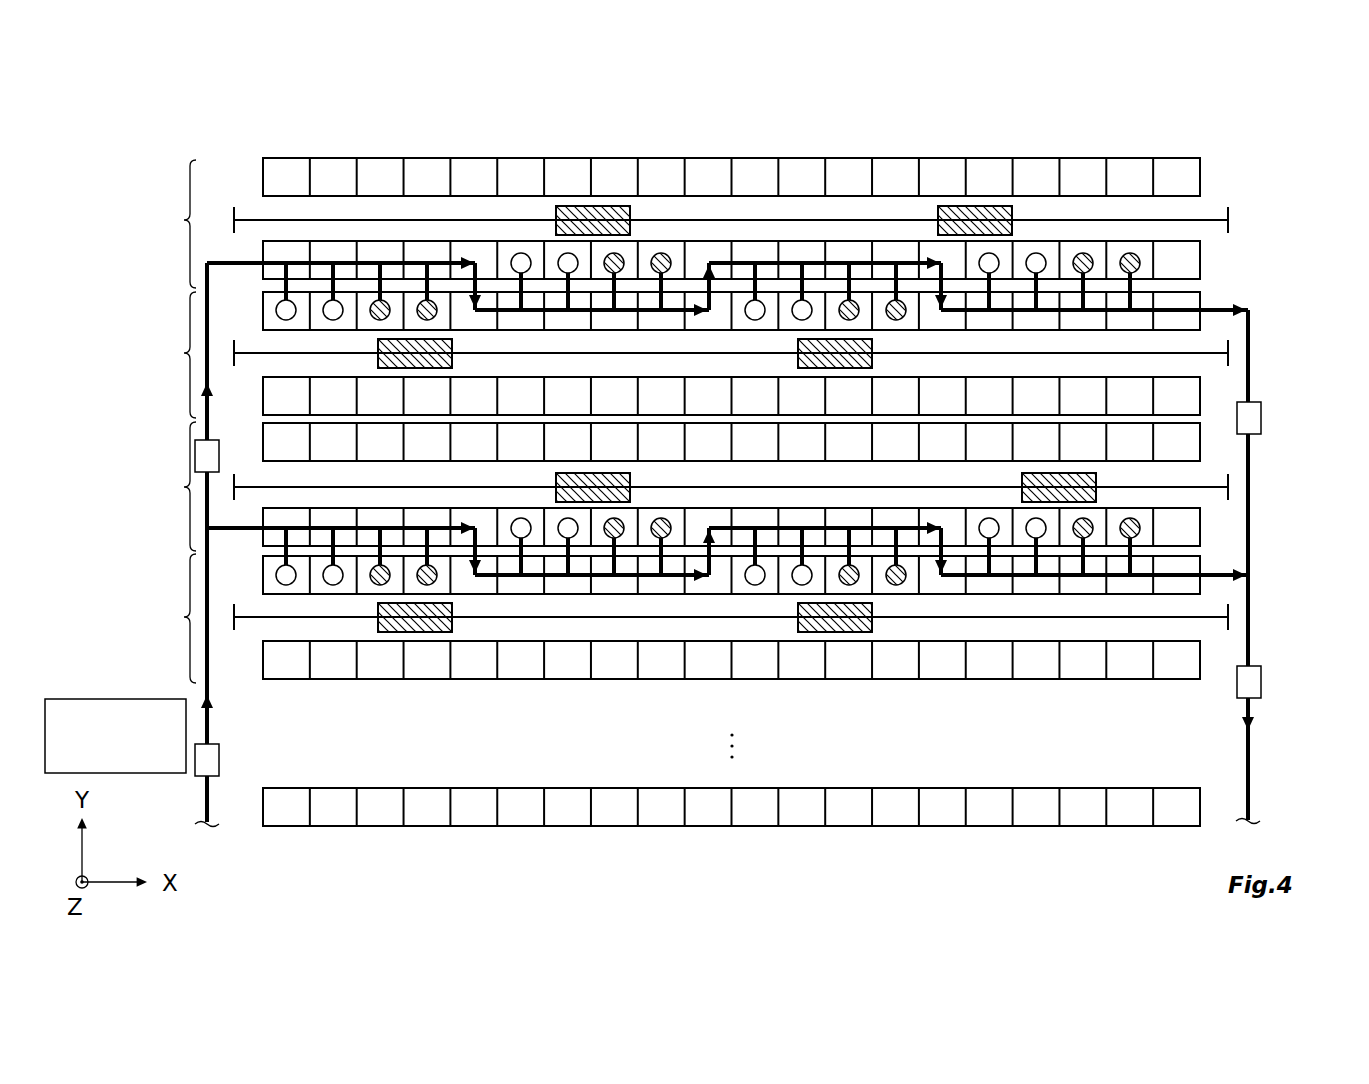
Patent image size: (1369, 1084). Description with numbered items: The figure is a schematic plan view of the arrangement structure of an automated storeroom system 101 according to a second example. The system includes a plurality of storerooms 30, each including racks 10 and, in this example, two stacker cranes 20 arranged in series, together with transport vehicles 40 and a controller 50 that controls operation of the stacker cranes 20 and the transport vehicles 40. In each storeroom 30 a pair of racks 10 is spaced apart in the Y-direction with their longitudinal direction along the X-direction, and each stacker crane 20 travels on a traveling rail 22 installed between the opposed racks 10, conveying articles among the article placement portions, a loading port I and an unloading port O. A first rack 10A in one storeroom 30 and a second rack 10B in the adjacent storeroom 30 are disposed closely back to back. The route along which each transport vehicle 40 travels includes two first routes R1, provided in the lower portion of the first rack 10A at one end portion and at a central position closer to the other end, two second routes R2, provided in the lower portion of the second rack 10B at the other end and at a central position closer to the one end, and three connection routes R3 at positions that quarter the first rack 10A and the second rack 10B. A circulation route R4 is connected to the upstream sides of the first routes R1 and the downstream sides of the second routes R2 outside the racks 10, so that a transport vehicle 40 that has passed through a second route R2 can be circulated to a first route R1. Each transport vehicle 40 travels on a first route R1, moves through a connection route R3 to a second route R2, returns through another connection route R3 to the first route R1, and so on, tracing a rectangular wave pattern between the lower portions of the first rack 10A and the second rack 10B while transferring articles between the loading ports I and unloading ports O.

The automated storeroom system 101 is at (148, 157).
The rack 10 is at (1222, 166).
The first rack 10A is at (1222, 254).
The second rack 10B is at (1222, 290).
The stacker crane 20 is at (605, 206).
The traveling rail 22 is at (1178, 215).
The storeroom 30 is at (173, 421).
The transport vehicle 40 is at (219, 440).
The controller 50 is at (65, 698).
The first route R1 is at (322, 262).
The second route R2 is at (1067, 307).
The connection route R3 is at (694, 282).
The circulation route R4 is at (1250, 356).
The loading port I is at (553, 252).
The unloading port O is at (438, 298).